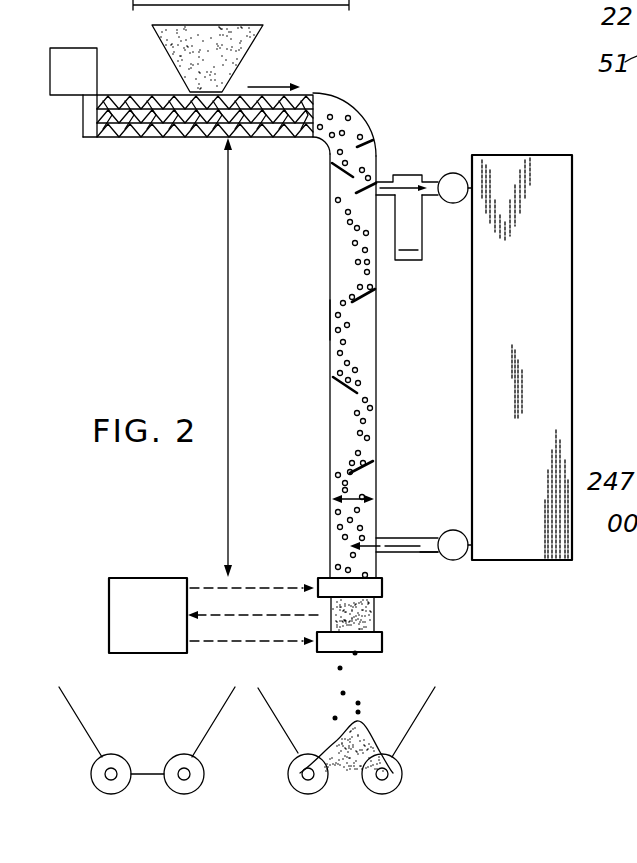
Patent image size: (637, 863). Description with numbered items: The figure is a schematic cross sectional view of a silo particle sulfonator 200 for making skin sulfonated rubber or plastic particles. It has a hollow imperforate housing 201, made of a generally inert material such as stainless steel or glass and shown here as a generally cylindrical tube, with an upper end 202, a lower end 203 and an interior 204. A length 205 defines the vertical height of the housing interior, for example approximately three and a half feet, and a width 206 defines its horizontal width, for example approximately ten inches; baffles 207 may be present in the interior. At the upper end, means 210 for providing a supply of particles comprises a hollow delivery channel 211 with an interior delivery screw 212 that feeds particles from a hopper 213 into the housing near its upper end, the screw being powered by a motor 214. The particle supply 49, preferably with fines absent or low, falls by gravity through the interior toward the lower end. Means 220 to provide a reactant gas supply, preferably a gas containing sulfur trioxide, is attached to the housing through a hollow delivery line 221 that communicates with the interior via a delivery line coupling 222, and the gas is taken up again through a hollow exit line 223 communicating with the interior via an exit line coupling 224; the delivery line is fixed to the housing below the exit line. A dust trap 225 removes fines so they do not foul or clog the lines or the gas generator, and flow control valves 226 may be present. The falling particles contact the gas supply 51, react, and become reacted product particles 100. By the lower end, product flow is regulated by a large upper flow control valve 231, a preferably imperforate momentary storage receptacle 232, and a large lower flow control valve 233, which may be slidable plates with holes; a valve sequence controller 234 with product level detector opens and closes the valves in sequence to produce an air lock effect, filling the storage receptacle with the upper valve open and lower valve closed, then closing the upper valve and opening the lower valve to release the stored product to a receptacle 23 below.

The receptacle 23 is at (273, 717).
The particle supply 49 is at (180, 53).
The gas supply 51 is at (340, 420).
The reacted product particle 100 is at (303, 733).
The silo particle sulfonator 200 is at (390, 88).
The hollow imperforate housing 201 is at (330, 257).
The upper end 202 is at (346, 103).
The lower end 203 is at (380, 555).
The interior 204 is at (332, 315).
The length 205 is at (228, 303).
The width 206 is at (341, 496).
The baffles 207 is at (378, 168).
The means for providing a supply of particles 210 is at (303, 88).
The hollow delivery channel 211 is at (243, 137).
The interior delivery screw 212 is at (193, 136).
The hopper 213 is at (249, 47).
The motor 214 is at (66, 86).
The means to provide a reactant gas supply 220 is at (555, 155).
The hollow delivery line 221 is at (427, 553).
The delivery line coupling 222 is at (376, 554).
The hollow exit line 223 is at (430, 196).
The exit line coupling 224 is at (405, 172).
The dust trap 225 is at (403, 257).
The flow control valves 226 is at (460, 202).
The upper flow control valve 231 is at (328, 584).
The momentary storage receptacle 232 is at (377, 619).
The lower flow control valve 233 is at (326, 643).
The valve sequence controller 234 is at (157, 594).